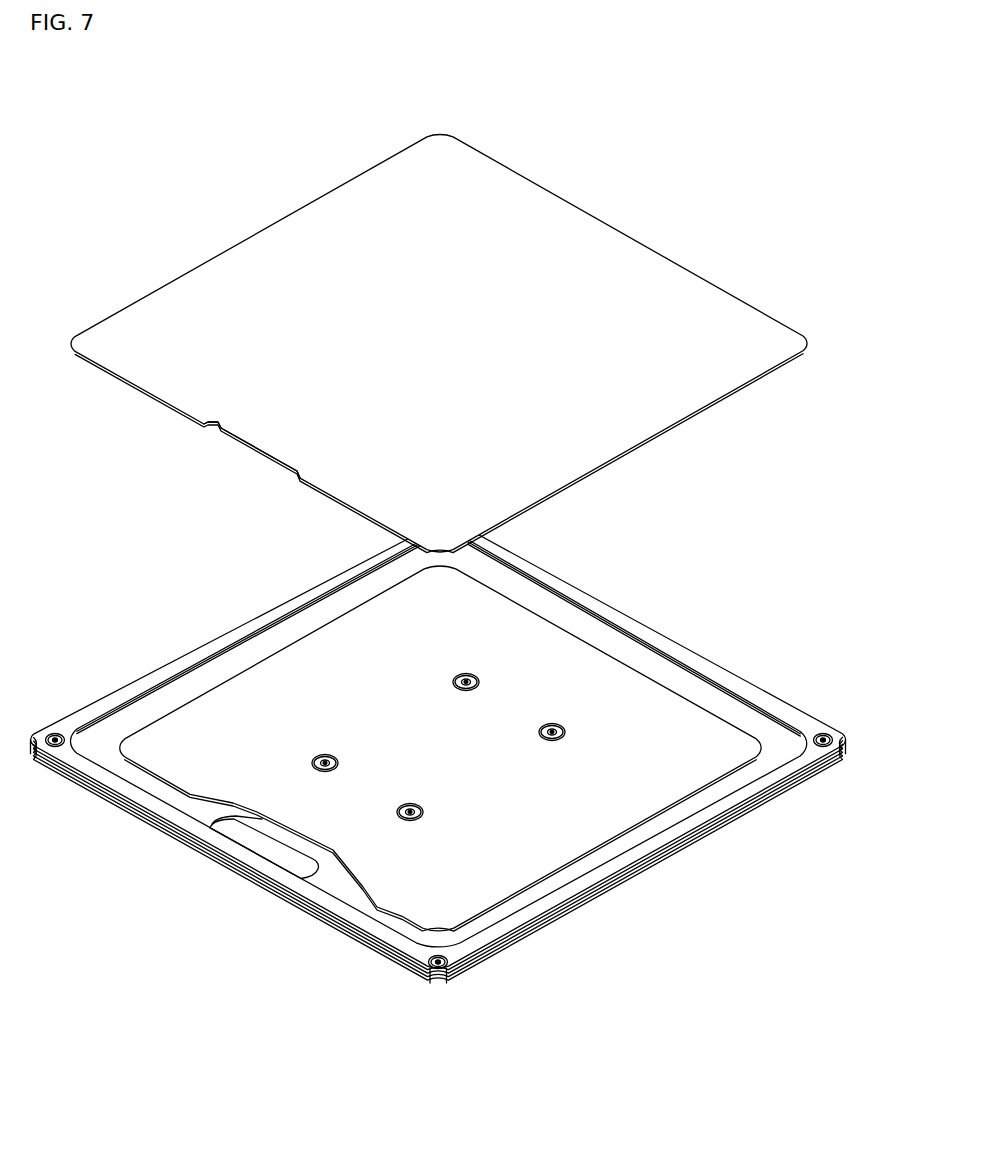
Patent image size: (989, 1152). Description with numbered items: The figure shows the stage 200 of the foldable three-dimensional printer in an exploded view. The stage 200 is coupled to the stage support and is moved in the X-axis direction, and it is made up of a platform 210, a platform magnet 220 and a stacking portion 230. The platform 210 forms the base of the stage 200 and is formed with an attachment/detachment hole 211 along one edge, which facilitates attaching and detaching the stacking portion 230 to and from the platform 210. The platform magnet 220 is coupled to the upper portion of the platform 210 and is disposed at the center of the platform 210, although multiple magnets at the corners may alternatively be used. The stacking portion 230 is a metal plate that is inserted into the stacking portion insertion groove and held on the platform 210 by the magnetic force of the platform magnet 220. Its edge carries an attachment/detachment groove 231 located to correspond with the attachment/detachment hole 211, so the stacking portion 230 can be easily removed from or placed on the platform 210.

The stage 200 is at (147, 123).
The platform 210 is at (797, 780).
The attachment/detachment hole 211 is at (271, 855).
The platform magnet 220 is at (640, 710).
The stacking portion 230 is at (615, 272).
The attachment/detachment groove 231 is at (248, 456).